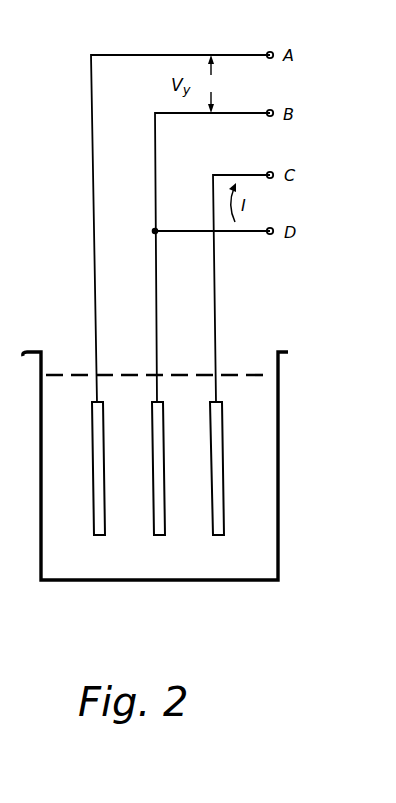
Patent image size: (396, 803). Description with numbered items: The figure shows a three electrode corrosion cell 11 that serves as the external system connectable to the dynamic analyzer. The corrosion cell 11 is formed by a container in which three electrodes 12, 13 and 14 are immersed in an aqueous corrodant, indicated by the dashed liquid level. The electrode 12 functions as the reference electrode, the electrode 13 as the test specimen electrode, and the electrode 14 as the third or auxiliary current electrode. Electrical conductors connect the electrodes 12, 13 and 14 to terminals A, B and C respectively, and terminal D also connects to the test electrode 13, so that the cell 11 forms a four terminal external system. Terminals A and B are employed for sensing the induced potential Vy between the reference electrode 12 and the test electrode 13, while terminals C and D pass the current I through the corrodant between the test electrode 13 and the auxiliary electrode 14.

The corrosion cell 11 is at (279, 492).
The reference electrode 12 is at (99, 537).
The test specimen electrode 13 is at (160, 537).
The auxiliary current electrode 14 is at (219, 537).